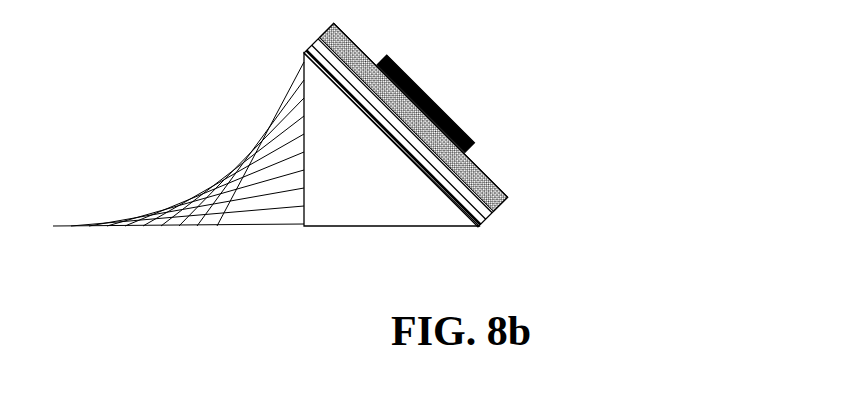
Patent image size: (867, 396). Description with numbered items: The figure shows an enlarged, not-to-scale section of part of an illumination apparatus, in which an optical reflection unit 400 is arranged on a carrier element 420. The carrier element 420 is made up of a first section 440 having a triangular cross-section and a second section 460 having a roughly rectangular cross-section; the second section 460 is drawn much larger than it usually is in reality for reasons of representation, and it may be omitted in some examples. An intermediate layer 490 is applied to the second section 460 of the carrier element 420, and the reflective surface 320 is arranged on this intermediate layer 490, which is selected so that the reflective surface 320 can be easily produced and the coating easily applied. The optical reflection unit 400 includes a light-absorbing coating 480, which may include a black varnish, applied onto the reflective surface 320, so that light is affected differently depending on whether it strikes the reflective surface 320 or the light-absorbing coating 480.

The optical reflection unit 400 is at (508, 82).
The reflective surface 320 is at (480, 163).
The carrier element 420 is at (378, 150).
The first section 440 is at (332, 183).
The second section 460 is at (482, 207).
The light-absorbing coating 480 is at (430, 100).
The intermediate layer 490 is at (502, 187).